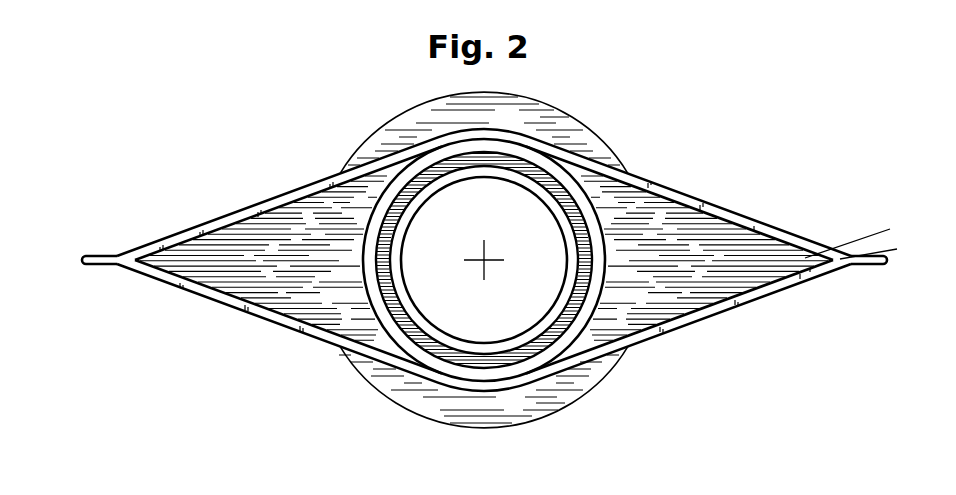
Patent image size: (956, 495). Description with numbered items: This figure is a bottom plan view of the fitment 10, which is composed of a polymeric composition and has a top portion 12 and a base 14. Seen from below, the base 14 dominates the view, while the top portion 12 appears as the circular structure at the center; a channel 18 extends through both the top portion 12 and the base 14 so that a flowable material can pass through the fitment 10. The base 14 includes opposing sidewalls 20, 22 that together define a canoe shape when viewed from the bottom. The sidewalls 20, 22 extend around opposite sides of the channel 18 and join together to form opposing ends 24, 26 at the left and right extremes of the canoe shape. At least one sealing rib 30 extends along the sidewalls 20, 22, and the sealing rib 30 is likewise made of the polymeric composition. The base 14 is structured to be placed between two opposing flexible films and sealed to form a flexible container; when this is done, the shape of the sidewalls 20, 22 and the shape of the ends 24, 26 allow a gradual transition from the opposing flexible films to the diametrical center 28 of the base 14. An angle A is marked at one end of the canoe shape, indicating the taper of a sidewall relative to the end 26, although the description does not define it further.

The fitment 10 is at (678, 121).
The top portion 12 is at (583, 110).
The base 14 is at (711, 191).
The channel 18 is at (444, 211).
The sidewall 20 is at (270, 209).
The sidewall 22 is at (282, 309).
The end 24 is at (74, 260).
The end 26 is at (894, 268).
The diametrical center 28 is at (460, 287).
The sealing rib 30 is at (221, 214).
The angle A is at (884, 233).